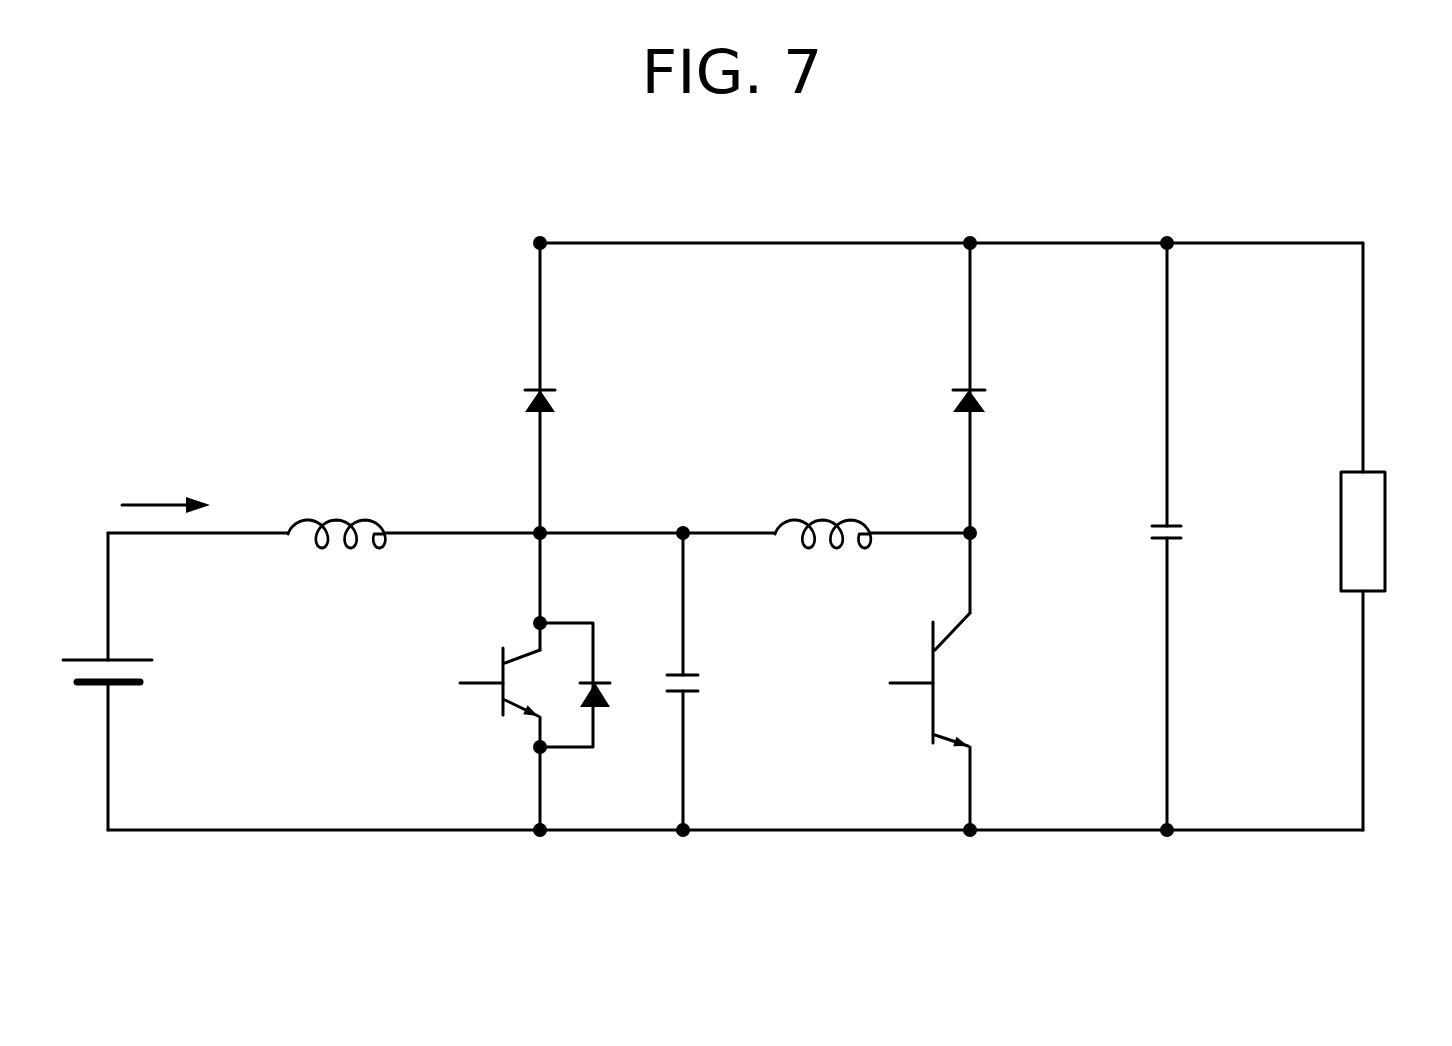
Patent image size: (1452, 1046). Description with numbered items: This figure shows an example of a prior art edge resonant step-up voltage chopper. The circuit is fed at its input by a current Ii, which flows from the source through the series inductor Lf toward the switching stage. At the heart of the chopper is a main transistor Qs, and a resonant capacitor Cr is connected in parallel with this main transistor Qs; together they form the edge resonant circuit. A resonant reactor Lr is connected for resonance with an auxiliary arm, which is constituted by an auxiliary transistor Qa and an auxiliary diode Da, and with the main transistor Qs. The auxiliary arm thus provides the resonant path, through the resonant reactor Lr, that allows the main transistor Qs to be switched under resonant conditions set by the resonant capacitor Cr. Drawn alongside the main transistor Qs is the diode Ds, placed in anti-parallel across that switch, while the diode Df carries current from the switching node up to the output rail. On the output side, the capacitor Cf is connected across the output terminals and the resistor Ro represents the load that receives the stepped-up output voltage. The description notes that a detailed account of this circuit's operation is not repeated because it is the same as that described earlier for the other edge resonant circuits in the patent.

The input current Ii is at (166, 493).
The filter inductor Lf is at (336, 552).
The freewheeling diode Df is at (557, 388).
The main transistor Qs is at (481, 681).
The anti-parallel diode of main switch Ds is at (566, 748).
The resonant capacitor Cr is at (684, 703).
The resonant reactor Lr is at (823, 552).
The auxiliary diode Da is at (952, 388).
The auxiliary transistor Qa is at (911, 681).
The filter capacitor Cf is at (1185, 536).
The load resistor Ro is at (1385, 531).